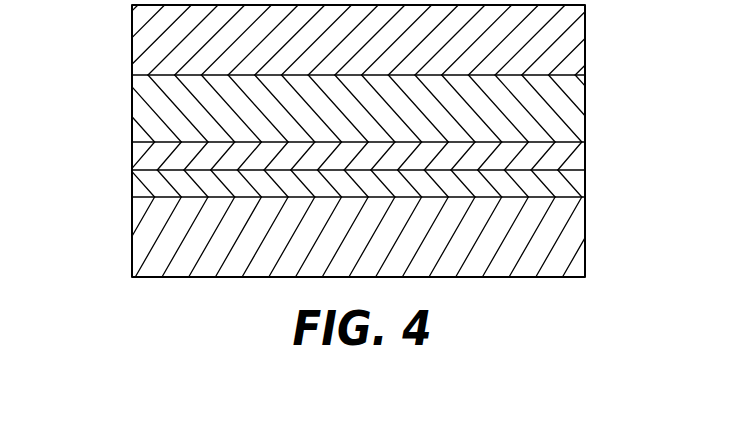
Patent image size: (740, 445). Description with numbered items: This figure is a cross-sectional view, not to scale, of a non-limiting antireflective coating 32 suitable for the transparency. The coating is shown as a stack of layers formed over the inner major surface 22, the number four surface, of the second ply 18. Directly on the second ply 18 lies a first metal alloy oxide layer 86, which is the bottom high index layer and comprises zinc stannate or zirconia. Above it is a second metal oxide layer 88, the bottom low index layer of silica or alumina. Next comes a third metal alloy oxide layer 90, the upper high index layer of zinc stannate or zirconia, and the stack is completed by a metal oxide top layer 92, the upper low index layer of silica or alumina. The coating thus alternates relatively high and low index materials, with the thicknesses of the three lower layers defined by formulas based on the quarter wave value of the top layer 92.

The second ply 18 is at (577, 239).
The inner major surface 22 is at (193, 197).
The antireflective coating 32 is at (361, 103).
The first metal alloy oxide layer 86 is at (135, 187).
The second metal oxide layer 88 is at (137, 155).
The third metal alloy oxide layer 90 is at (137, 118).
The metal oxide top layer 92 is at (137, 48).